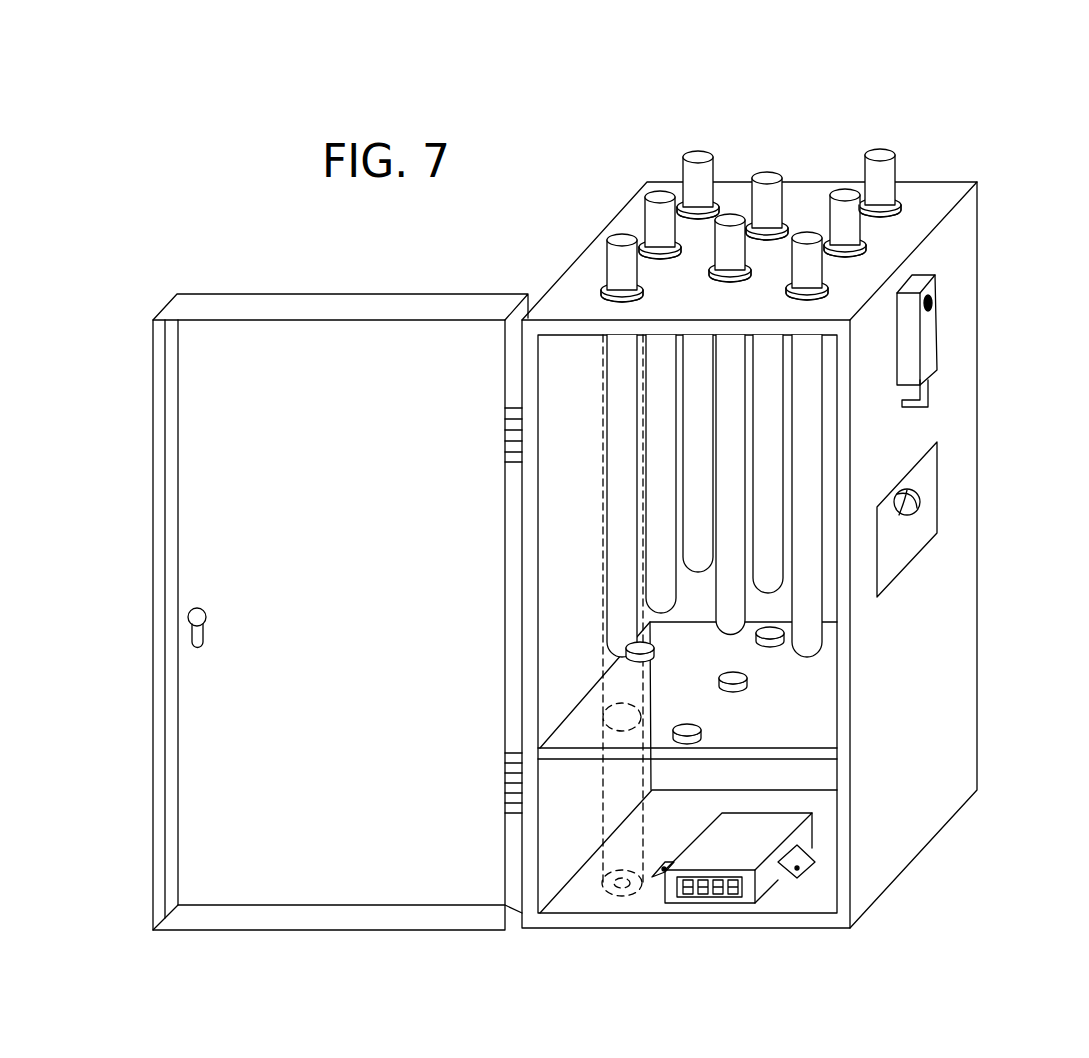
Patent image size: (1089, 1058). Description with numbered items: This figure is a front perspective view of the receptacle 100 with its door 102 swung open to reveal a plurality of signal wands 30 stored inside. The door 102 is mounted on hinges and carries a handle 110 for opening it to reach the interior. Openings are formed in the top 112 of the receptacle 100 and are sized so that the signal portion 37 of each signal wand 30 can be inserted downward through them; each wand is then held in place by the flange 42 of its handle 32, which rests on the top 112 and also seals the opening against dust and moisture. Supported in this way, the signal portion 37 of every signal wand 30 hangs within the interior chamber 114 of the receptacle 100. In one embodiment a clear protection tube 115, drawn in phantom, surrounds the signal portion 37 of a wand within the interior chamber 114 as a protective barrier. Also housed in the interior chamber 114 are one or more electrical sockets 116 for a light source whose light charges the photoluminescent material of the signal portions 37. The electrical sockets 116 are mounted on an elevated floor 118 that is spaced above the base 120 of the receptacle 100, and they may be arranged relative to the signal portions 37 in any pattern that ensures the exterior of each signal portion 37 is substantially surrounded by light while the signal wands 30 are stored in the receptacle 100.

The signal wand 30 is at (693, 141).
The handle 32 is at (634, 279).
The signal portion 37 is at (818, 481).
The flange 42 is at (703, 217).
The receptacle 100 is at (983, 148).
The door 102 is at (372, 642).
The handle 110 is at (195, 607).
The top 112 is at (947, 193).
The interior chamber 114 is at (565, 410).
The clear protection tube 115 is at (600, 780).
The electrical socket 116 is at (651, 639).
The elevated floor 118 is at (757, 740).
The base 120 is at (800, 884).